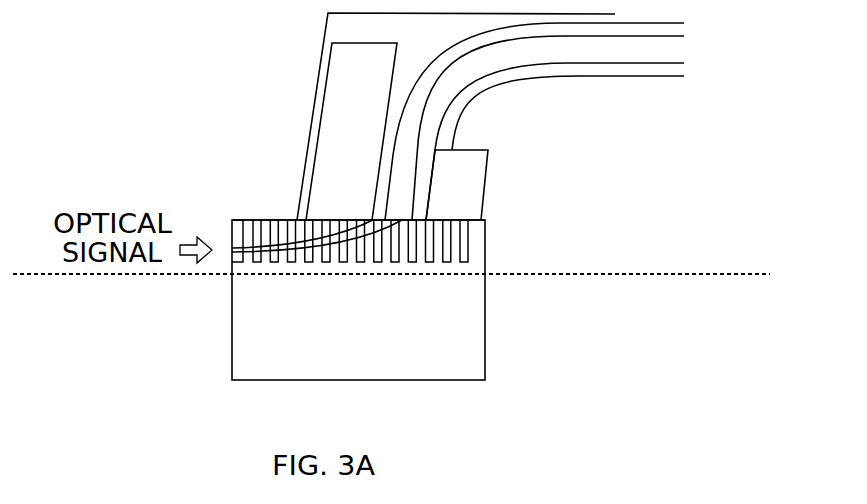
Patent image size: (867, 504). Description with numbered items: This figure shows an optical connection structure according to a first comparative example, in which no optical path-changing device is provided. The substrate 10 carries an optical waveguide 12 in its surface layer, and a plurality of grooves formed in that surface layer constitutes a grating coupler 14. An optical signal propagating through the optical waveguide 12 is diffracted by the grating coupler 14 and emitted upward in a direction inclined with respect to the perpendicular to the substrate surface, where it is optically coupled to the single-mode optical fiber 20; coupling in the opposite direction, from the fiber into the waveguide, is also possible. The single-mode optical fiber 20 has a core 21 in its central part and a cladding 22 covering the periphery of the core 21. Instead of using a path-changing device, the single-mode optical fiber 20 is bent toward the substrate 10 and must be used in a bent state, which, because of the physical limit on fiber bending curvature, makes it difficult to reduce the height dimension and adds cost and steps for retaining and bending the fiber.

The substrate 10 is at (446, 380).
The optical waveguide 12 is at (484, 242).
The grating coupler 14 is at (465, 218).
The single-mode optical fiber 20 is at (640, 77).
The core 21 is at (675, 50).
The cladding 22 is at (675, 28).